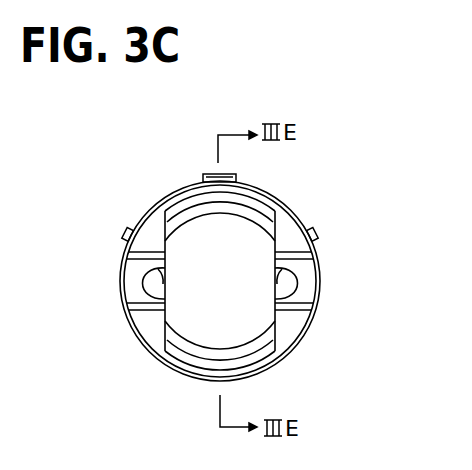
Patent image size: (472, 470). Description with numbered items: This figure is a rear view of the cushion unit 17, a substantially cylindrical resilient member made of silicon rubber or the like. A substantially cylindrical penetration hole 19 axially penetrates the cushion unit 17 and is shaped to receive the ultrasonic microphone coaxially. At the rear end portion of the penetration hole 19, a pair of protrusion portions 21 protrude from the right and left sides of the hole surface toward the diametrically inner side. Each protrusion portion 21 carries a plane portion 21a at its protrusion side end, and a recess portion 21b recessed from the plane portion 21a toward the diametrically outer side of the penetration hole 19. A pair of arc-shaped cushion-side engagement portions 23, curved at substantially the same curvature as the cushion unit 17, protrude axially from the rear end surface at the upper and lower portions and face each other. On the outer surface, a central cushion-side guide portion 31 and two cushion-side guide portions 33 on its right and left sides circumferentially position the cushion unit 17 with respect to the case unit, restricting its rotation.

The cushion unit 17 is at (362, 160).
The penetration hole 19 is at (240, 252).
The protrusion portion 21 is at (275, 300).
The plane portion 21a is at (277, 256).
The recess portion 21b is at (141, 272).
The cushion-side engagement portion 23 is at (193, 213).
The cushion-side guide portion 31 is at (228, 175).
The cushion-side guide portion 33 is at (126, 232).